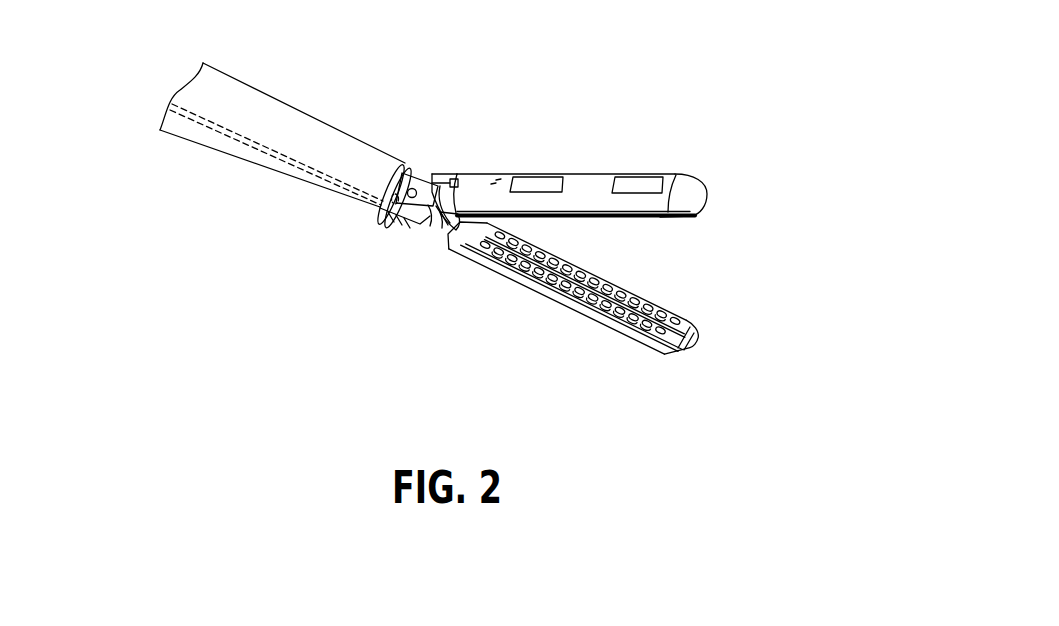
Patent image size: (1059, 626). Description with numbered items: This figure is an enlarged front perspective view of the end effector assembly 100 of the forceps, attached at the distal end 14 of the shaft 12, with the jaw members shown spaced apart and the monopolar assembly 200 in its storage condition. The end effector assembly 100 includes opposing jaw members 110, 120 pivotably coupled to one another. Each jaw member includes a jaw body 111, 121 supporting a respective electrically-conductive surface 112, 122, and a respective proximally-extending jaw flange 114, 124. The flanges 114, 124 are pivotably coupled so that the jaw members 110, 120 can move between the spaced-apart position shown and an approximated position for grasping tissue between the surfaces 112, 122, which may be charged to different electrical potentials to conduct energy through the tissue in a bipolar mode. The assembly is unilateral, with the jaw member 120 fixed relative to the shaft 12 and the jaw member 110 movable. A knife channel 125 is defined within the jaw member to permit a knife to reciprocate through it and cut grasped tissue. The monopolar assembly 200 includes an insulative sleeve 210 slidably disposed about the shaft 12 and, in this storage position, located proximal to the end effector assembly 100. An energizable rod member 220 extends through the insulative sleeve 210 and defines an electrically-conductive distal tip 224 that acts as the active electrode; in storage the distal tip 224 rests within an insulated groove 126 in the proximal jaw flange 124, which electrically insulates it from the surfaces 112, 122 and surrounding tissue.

The end effector assembly 100 is at (525, 218).
The jaw member 110 is at (590, 169).
The jaw body 111 is at (590, 177).
The electrically-conductive surface 112 is at (653, 218).
The jaw flange 114 is at (438, 180).
The shaft 12 is at (415, 168).
The distal end 14 is at (375, 254).
The jaw member 120 is at (589, 315).
The jaw body 121 is at (577, 323).
The electrically-conductive surface 122 is at (657, 300).
The jaw flange 124 is at (430, 230).
The knife channel 125 is at (593, 272).
The insulated groove 126 is at (440, 230).
The monopolar assembly 200 is at (287, 159).
The insulative sleeve 210 is at (270, 111).
The energizable rod member 220 is at (277, 160).
The distal tip 224 is at (447, 237).